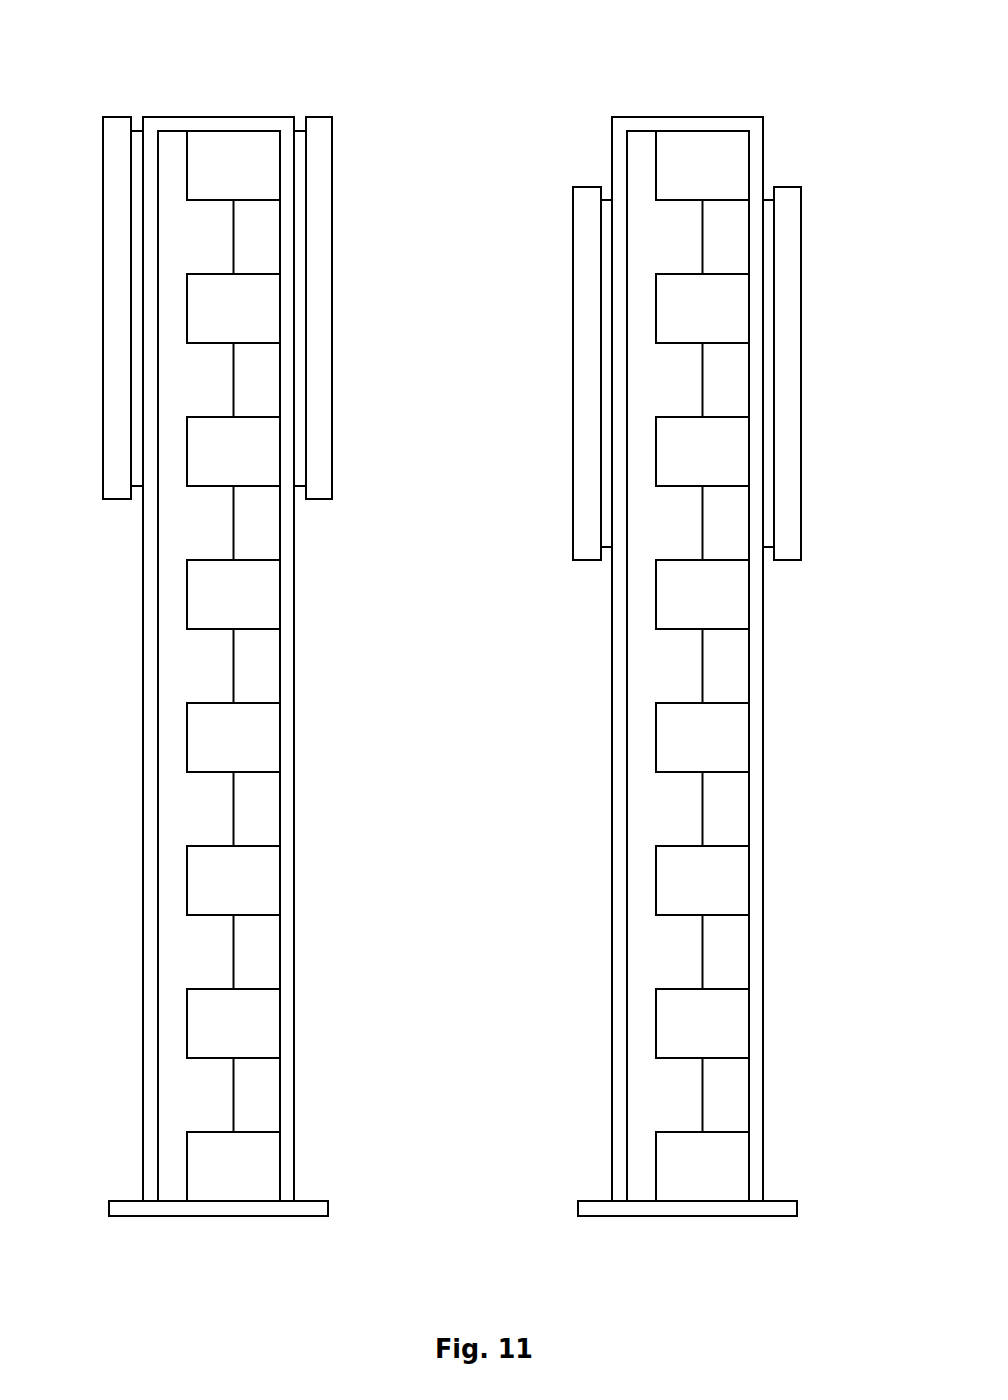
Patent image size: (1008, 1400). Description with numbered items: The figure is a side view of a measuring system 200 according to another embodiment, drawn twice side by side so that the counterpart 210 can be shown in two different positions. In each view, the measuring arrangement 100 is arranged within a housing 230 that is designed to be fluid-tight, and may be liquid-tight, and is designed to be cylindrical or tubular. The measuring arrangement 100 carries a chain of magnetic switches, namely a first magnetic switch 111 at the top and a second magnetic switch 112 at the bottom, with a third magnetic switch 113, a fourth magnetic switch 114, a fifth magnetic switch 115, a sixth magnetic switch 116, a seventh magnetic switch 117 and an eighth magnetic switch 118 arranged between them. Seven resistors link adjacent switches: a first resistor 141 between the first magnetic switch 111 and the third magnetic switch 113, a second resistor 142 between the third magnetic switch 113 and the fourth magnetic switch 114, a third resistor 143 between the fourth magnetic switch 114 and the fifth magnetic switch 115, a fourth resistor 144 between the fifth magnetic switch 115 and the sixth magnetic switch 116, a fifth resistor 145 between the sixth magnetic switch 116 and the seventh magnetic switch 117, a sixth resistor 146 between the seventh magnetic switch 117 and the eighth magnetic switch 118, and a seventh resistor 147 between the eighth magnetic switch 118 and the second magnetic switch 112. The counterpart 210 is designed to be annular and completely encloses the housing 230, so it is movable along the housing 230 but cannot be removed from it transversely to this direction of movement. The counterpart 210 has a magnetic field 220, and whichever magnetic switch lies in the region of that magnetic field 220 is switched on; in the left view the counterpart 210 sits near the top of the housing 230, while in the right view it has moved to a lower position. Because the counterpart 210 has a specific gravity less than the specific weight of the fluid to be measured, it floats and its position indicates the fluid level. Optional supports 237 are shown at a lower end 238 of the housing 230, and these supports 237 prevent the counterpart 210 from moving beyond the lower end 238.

The measuring arrangement 100 is at (172, 138).
The first magnetic switch 111 is at (212, 182).
The second magnetic switch 112 is at (212, 1183).
The third magnetic switch 113 is at (212, 325).
The fourth magnetic switch 114 is at (212, 468).
The fifth magnetic switch 115 is at (212, 611).
The sixth magnetic switch 116 is at (212, 754).
The seventh magnetic switch 117 is at (212, 897).
The eighth magnetic switch 118 is at (212, 1040).
The first resistor 141 is at (197, 238).
The second resistor 142 is at (197, 384).
The third resistor 143 is at (197, 535).
The fourth resistor 144 is at (197, 672).
The fifth resistor 145 is at (197, 815).
The sixth resistor 146 is at (197, 958).
The seventh resistor 147 is at (197, 1100).
The measuring system 200 is at (133, 28).
The counterpart 210 is at (118, 117).
The magnetic field 220 is at (136, 398).
The housing 230 is at (288, 1230).
The supports 237 is at (122, 1218).
The lower end 238 is at (222, 1218).